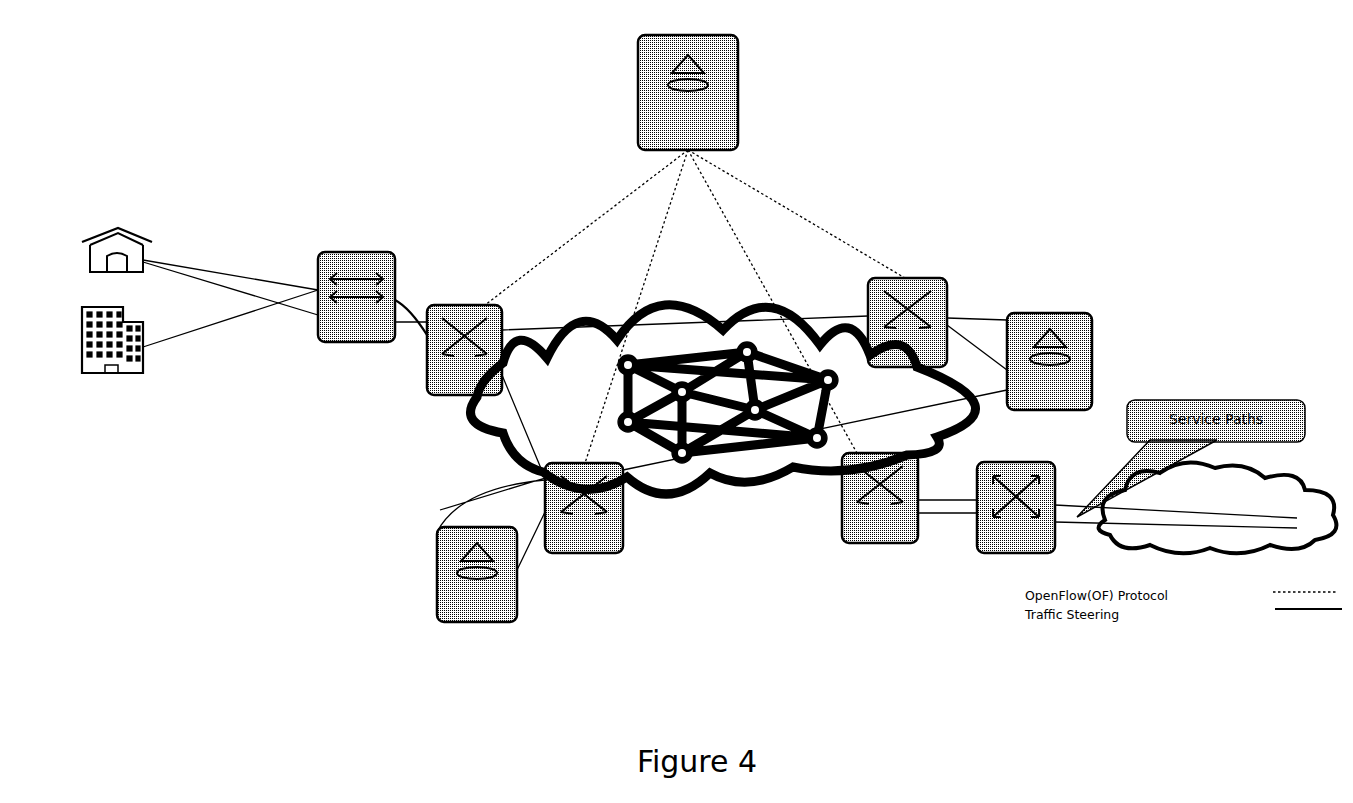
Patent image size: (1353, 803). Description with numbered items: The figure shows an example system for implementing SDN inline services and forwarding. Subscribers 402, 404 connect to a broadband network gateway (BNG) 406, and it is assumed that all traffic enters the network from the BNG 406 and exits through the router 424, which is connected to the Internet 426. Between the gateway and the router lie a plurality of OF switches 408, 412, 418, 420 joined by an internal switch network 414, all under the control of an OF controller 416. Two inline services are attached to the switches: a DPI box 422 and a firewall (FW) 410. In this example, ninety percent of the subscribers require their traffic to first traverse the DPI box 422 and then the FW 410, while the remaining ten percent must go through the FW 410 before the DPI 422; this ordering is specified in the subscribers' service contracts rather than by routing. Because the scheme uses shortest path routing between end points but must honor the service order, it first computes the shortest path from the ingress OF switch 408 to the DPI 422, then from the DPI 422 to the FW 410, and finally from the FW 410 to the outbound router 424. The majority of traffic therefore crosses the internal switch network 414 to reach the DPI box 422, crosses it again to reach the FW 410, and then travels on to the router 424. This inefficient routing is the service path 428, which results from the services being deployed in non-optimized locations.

The subscriber 402 is at (132, 222).
The subscriber 404 is at (93, 375).
The broadband network gateway (BNG) 406 is at (343, 250).
The OF switch 408 is at (428, 372).
The firewall (FW) 410 is at (468, 625).
The OF switch 412 is at (607, 553).
The internal switch network 414 is at (732, 485).
The OF controller 416 is at (733, 87).
The OF switch 418 is at (947, 287).
The OF switch 420 is at (893, 542).
The DPI box 422 is at (1067, 310).
The router 424 is at (1005, 555).
The Internet 426 is at (1157, 542).
The service path 428 is at (307, 315).